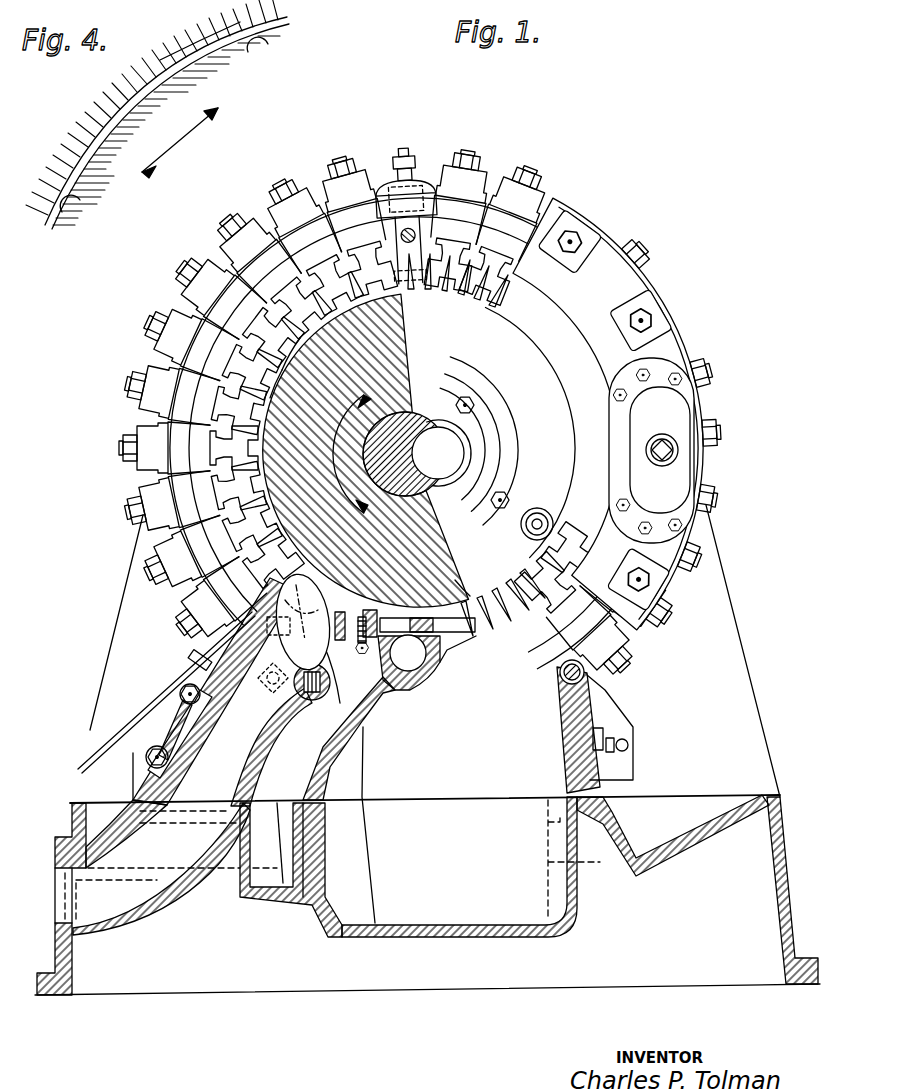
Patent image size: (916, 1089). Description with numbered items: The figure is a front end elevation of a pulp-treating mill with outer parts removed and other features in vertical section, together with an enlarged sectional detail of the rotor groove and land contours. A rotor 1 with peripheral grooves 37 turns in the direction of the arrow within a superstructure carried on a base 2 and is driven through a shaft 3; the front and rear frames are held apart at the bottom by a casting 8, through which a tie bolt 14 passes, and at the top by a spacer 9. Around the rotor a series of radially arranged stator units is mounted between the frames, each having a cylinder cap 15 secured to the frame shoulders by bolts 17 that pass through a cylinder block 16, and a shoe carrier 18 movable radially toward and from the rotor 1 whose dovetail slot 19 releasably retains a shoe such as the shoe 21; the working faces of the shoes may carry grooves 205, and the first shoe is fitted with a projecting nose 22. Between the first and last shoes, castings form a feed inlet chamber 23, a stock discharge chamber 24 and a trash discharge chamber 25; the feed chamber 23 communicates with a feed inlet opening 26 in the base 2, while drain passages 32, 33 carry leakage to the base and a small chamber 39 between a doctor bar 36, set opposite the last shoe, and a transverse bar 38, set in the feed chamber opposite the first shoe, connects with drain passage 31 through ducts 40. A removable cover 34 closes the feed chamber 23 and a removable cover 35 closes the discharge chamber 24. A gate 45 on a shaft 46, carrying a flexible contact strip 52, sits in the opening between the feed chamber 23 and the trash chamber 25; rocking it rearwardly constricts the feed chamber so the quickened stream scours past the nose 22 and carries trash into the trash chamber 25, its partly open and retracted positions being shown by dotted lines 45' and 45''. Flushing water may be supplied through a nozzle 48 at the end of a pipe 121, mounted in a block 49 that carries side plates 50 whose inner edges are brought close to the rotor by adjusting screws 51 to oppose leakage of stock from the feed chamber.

In FIG. 4, the rotor 1 is at (216, 78).
In FIG. 1, the rotor 1 is at (366, 450).
In FIG. 1, the base 2 is at (413, 130).
In FIG. 1, the shaft 3 is at (418, 412).
In FIG. 1, the casting 8 is at (520, 165).
In FIG. 1, the spacer 9 is at (426, 186).
In FIG. 1, the tie bolt 14 is at (560, 668).
In FIG. 1, the cylinder cap 15 is at (300, 210).
In FIG. 1, the cylinder block 16 is at (262, 246).
In FIG. 1, the bolt 17 is at (342, 162).
In FIG. 1, the shoe carrier 18 is at (336, 276).
In FIG. 1, the dovetail slot 19 is at (374, 286).
In FIG. 1, the shoe 21 is at (268, 412).
In FIG. 1, the projecting nose 22 is at (288, 530).
In FIG. 1, the feed inlet chamber 23 is at (214, 691).
In FIG. 1, the stock discharge chamber 24 is at (454, 694).
In FIG. 1, the trash discharge chamber 25 is at (272, 747).
In FIG. 1, the feed inlet opening 26 is at (68, 873).
In FIG. 1, the drain passage 31 is at (420, 665).
In FIG. 1, the drain passage 32 is at (268, 832).
In FIG. 1, the drain passage 33 is at (546, 832).
In FIG. 1, the removable cover 34 is at (188, 753).
In FIG. 1, the removable cover 35 is at (562, 744).
In FIG. 1, the doctor bar 36 is at (456, 626).
In FIG. 4, the peripheral groove 37 is at (260, 50).
In FIG. 1, the peripheral groove 37 is at (288, 376).
In FIG. 1, the transverse bar 38 is at (372, 610).
In FIG. 1, the small chamber 39 is at (428, 616).
In FIG. 1, the duct 40 is at (409, 662).
In FIG. 1, the gate 45 is at (345, 673).
In FIG. 1, the intermediate gate position 45' is at (303, 622).
In FIG. 1, the retracted gate position 45'' is at (257, 682).
In FIG. 1, the shaft 46 is at (322, 694).
In FIG. 1, the nozzle 48 is at (258, 602).
In FIG. 1, the block 49 is at (276, 640).
In FIG. 1, the side plate 50 is at (362, 650).
In FIG. 1, the adjusting screw 51 is at (196, 660).
In FIG. 1, the flexible contact strip 52 is at (334, 616).
In FIG. 1, the pipe 121 is at (120, 740).
In FIG. 1, the groove 205 is at (312, 336).